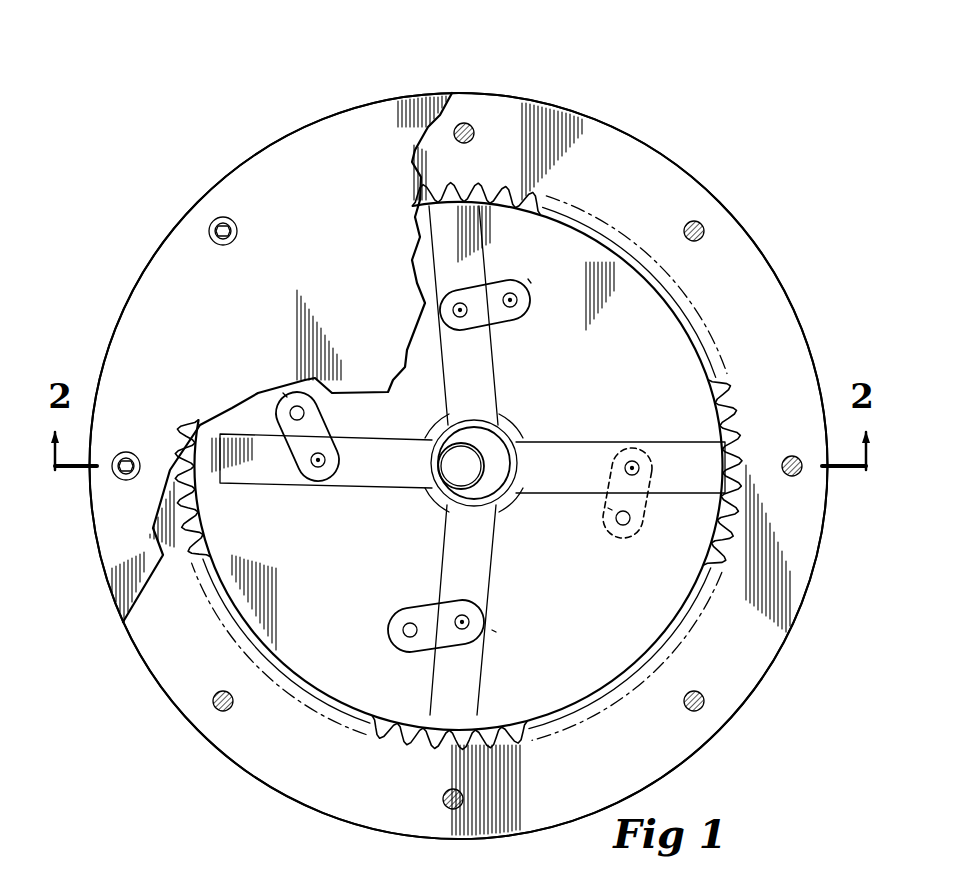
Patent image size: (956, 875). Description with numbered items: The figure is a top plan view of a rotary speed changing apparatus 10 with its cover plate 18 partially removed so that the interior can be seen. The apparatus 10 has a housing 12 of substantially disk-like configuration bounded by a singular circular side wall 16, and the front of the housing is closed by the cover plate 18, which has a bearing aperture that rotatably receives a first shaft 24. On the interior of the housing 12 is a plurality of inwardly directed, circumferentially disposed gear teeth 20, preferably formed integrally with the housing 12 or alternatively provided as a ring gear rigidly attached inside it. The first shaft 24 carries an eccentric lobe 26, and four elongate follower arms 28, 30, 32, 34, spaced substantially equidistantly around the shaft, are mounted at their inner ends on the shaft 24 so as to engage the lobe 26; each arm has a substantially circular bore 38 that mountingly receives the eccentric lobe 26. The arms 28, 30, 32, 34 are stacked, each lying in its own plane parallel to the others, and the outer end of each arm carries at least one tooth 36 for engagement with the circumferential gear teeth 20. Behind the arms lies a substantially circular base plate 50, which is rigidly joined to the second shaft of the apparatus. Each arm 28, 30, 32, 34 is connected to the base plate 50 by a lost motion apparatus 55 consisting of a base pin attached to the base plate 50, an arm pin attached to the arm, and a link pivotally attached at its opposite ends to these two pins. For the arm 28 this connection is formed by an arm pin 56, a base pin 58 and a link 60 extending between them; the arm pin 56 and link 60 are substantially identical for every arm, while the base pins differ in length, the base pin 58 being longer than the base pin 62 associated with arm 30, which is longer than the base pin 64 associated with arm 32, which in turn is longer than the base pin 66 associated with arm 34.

The rotary speed changing apparatus 10 is at (225, 128).
The housing 12 is at (128, 292).
The side wall 16 is at (540, 105).
The cover plate 18 is at (262, 283).
The gear teeth 20 is at (530, 212).
The first shaft 24 is at (458, 458).
The eccentric lobe 26 is at (493, 433).
The follower arm 28 is at (610, 448).
The follower arm 30 is at (488, 378).
The follower arm 32 is at (368, 483).
The follower arm 34 is at (490, 550).
The tooth 36 is at (462, 198).
The circular bore 38 is at (512, 446).
The base plate 50 is at (602, 347).
The lost motion apparatus 55 is at (528, 278).
The arm pin 56 is at (453, 310).
The base pin 58 is at (630, 520).
The link 60 is at (495, 320).
The base pin 62 is at (518, 299).
The base pin 64 is at (300, 413).
The base pin 66 is at (405, 631).